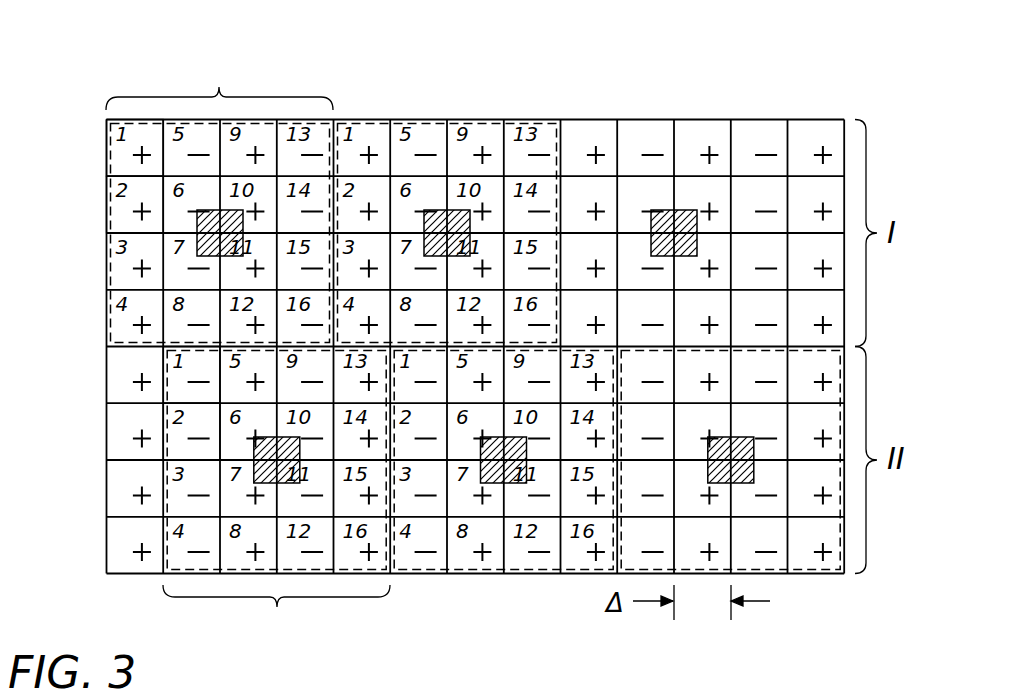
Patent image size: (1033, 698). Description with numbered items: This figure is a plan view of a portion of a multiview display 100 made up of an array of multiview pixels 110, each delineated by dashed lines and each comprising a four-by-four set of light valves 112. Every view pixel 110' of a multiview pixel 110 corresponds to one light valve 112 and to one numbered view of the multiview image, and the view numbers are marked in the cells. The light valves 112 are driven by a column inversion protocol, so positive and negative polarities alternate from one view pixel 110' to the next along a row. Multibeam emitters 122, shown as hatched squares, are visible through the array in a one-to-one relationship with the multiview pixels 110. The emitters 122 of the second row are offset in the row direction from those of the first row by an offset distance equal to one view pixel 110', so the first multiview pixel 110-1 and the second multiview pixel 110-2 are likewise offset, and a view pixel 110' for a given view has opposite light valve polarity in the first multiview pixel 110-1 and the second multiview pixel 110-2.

The multiview display 100 is at (806, 50).
The multiview pixel 110 is at (476, 315).
The light valve 112 is at (660, 108).
The multibeam emitter 122 is at (737, 437).
The view pixel 110' is at (118, 294).
The first multiview pixel 110-1 is at (219, 80).
The second multiview pixel 110-2 is at (276, 617).